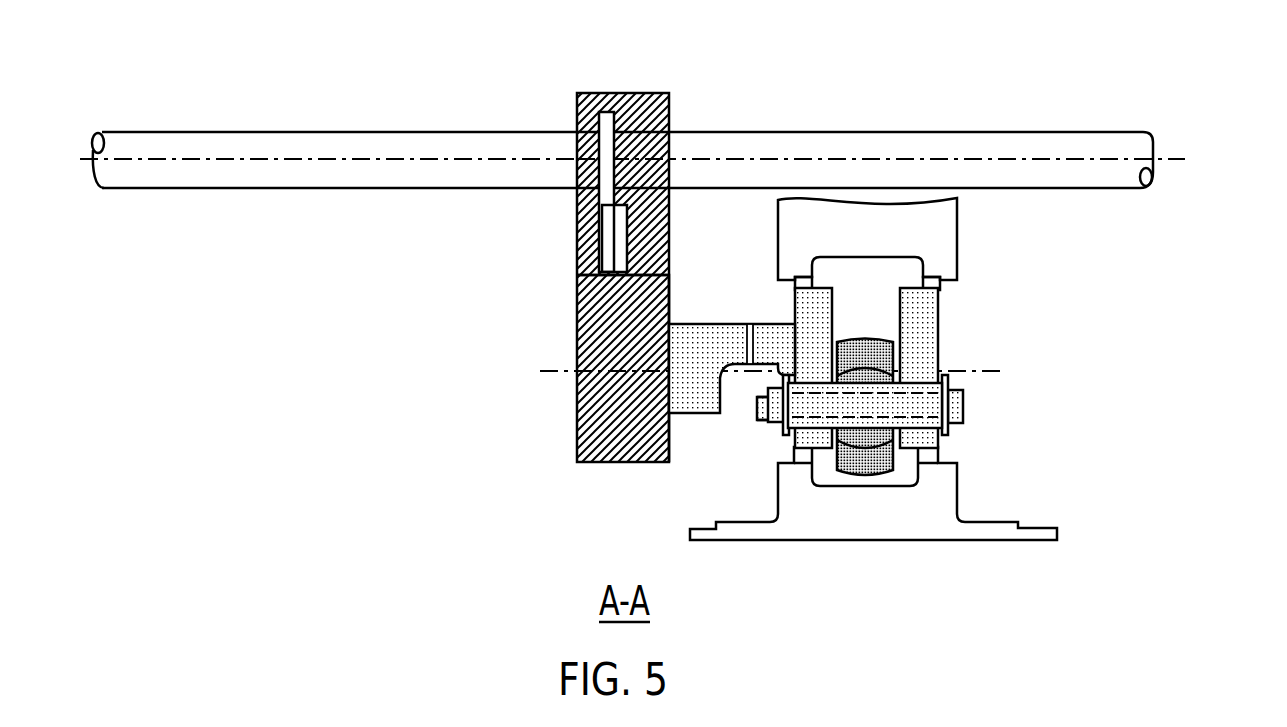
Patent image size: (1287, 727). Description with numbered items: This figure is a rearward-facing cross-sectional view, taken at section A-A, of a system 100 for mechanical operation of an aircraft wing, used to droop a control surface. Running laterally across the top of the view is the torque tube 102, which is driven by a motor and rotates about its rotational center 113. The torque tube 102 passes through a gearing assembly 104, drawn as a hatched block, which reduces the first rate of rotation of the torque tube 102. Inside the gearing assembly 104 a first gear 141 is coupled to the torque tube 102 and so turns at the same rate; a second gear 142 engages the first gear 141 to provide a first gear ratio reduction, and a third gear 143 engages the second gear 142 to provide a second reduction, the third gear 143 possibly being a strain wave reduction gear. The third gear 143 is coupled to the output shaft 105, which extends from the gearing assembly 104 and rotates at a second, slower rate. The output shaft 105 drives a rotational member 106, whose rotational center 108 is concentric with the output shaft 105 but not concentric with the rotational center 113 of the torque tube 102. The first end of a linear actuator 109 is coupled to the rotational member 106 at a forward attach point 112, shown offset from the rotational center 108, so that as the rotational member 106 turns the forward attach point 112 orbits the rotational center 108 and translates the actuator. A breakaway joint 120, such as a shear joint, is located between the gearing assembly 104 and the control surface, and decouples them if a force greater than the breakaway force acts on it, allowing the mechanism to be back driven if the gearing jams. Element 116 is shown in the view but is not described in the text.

The system for mechanical operation of an aircraft wing 100 is at (1208, 117).
The torque tube 102 is at (962, 128).
The gearing assembly 104 is at (650, 92).
The output shaft 105 is at (697, 415).
The rotational member 106 is at (957, 330).
The rotational center of the rotational member 108 is at (560, 371).
The linear actuator 109 is at (886, 476).
The forward attach point 112 is at (963, 407).
The rotational center of the torque tube 113 is at (1170, 162).
The joint 116 is at (757, 408).
The breakaway joint 120 is at (747, 323).
The first gear 141 is at (577, 156).
The second gear 142 is at (600, 233).
The third gear 143 is at (669, 285).